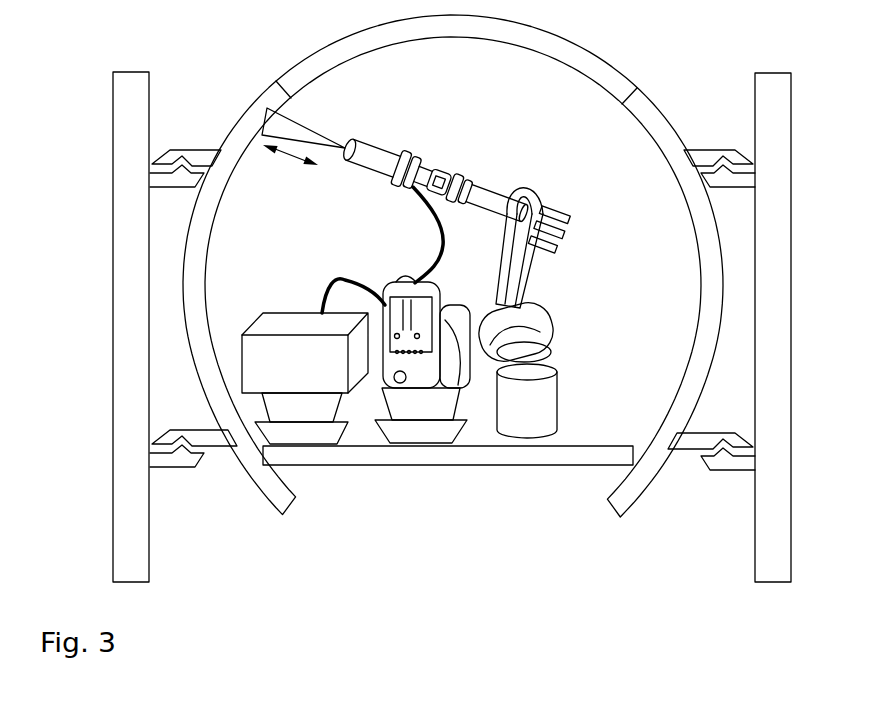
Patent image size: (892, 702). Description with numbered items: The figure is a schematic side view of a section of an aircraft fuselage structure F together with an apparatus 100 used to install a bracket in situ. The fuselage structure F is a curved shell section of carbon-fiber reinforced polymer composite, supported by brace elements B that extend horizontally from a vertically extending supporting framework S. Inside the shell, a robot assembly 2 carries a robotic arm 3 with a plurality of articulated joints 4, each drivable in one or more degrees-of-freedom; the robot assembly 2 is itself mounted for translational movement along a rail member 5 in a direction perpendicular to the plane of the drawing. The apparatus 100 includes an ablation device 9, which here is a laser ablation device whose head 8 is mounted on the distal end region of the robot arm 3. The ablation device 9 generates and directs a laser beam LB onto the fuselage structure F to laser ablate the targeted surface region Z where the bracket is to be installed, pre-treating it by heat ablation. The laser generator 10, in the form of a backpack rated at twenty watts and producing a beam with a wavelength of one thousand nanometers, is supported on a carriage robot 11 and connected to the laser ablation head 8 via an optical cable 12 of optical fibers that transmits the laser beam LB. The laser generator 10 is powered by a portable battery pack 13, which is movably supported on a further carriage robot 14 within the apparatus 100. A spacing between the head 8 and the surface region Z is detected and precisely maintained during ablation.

The robot assembly 2 is at (590, 299).
The robotic arm 3 is at (527, 258).
The articulated joints 4 is at (443, 170).
The rail member 5 is at (601, 445).
The laser ablation head 8 is at (391, 126).
The ablation device 9 is at (294, 229).
The laser generator 10 is at (382, 263).
The carriage robot 11 is at (442, 468).
The optical cable 12 is at (442, 253).
The portable battery pack 13 is at (277, 330).
The carriage robot 14 is at (312, 468).
The apparatus 100 is at (505, 130).
The brace elements B is at (177, 148).
The fuselage structure F is at (205, 233).
The supporting framework S is at (126, 328).
The surface region Z is at (264, 88).
The laser beam LB is at (307, 127).